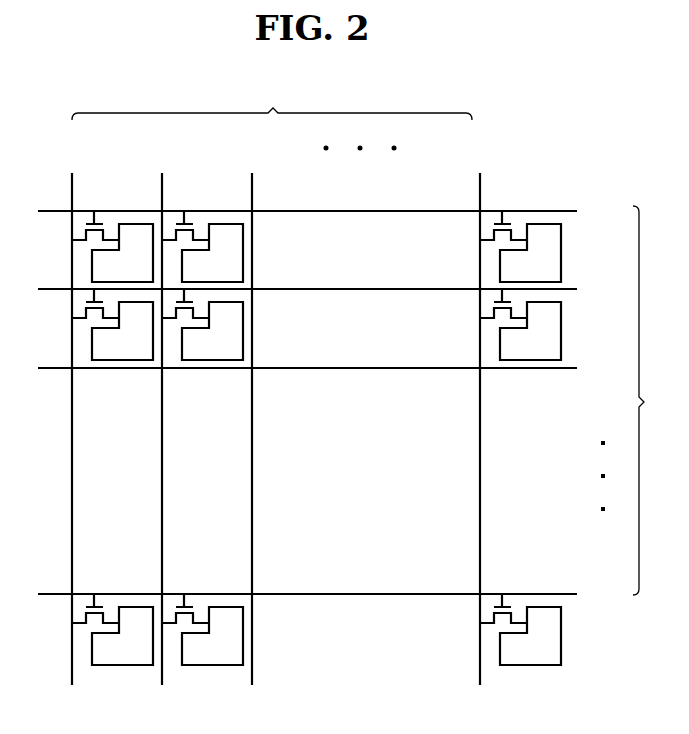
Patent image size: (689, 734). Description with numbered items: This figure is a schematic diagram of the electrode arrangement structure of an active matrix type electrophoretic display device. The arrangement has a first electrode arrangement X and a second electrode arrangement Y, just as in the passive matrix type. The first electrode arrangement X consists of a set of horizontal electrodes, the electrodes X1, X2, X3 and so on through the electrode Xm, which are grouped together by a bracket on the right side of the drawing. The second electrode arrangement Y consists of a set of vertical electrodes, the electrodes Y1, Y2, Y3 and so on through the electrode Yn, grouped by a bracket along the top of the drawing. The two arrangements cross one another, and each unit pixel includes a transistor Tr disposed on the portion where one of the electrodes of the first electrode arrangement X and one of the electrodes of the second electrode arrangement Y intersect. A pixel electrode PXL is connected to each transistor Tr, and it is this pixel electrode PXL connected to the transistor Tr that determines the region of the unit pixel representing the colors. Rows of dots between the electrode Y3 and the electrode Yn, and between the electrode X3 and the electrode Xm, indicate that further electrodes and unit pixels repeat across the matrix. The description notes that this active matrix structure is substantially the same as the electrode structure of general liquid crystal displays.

The transistor Tr is at (307, 387).
The pixel electrode PXL is at (326, 444).
The second electrode arrangement Y is at (272, 99).
The electrode of second electrode arrangement Y1 is at (69, 410).
The electrode of second electrode arrangement Y2 is at (159, 410).
The electrode of second electrode arrangement Y3 is at (251, 410).
The electrode of second electrode arrangement Yn is at (477, 410).
The first electrode arrangement X is at (652, 400).
The electrode of first electrode arrangement X1 is at (326, 210).
The electrode of first electrode arrangement X2 is at (327, 290).
The electrode of first electrode arrangement X3 is at (327, 369).
The electrode of first electrode arrangement Xm is at (329, 594).